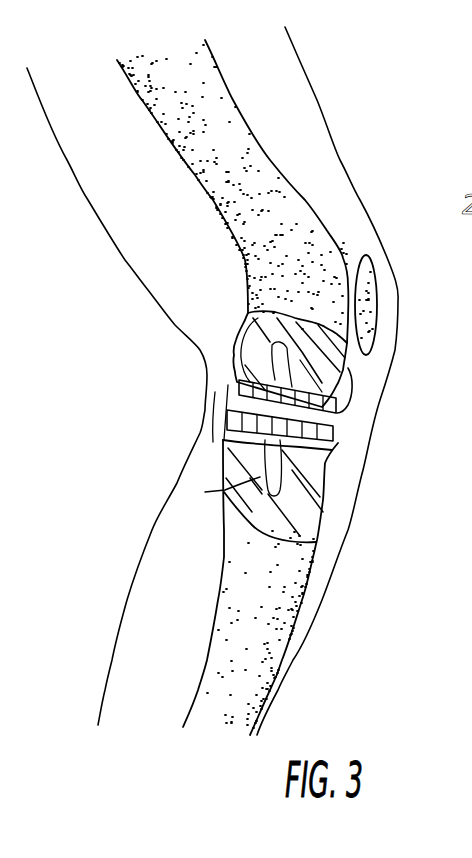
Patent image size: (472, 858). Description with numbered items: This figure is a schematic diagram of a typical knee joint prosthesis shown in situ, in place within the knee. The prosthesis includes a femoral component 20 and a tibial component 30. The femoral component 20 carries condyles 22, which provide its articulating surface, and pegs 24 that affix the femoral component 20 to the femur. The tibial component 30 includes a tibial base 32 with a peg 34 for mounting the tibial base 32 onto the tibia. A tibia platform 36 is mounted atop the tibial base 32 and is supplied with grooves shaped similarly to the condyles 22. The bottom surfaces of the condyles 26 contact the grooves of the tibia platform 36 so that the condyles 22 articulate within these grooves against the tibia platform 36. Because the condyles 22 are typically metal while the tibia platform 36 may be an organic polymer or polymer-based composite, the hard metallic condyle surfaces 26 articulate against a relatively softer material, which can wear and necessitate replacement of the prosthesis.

The femoral component 20 is at (357, 385).
The condyles 22 is at (242, 380).
The pegs 24 is at (247, 316).
The bottom surfaces of the condyles 26 is at (325, 428).
The tibial component 30 is at (340, 450).
The tibial base 32 is at (230, 443).
The peg 34 is at (225, 490).
The tibia platform 36 is at (335, 440).